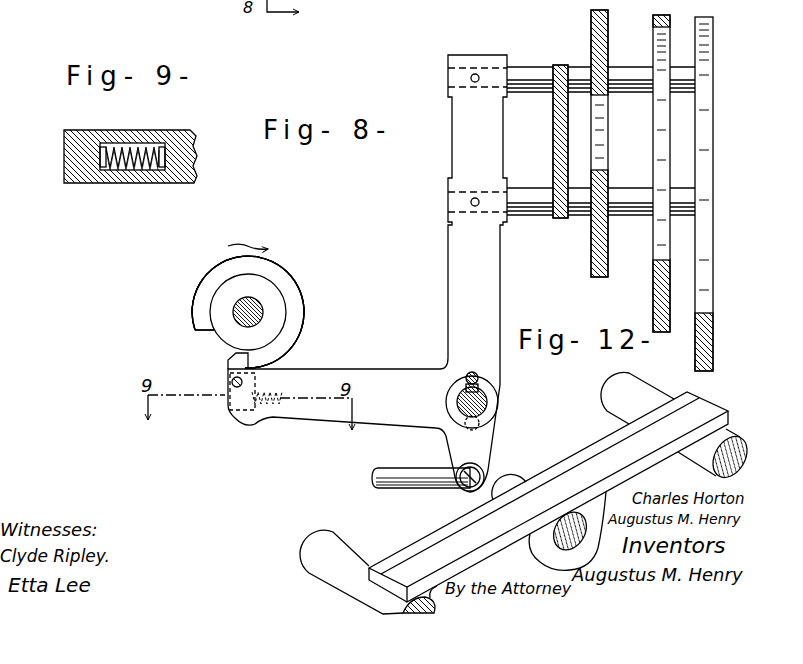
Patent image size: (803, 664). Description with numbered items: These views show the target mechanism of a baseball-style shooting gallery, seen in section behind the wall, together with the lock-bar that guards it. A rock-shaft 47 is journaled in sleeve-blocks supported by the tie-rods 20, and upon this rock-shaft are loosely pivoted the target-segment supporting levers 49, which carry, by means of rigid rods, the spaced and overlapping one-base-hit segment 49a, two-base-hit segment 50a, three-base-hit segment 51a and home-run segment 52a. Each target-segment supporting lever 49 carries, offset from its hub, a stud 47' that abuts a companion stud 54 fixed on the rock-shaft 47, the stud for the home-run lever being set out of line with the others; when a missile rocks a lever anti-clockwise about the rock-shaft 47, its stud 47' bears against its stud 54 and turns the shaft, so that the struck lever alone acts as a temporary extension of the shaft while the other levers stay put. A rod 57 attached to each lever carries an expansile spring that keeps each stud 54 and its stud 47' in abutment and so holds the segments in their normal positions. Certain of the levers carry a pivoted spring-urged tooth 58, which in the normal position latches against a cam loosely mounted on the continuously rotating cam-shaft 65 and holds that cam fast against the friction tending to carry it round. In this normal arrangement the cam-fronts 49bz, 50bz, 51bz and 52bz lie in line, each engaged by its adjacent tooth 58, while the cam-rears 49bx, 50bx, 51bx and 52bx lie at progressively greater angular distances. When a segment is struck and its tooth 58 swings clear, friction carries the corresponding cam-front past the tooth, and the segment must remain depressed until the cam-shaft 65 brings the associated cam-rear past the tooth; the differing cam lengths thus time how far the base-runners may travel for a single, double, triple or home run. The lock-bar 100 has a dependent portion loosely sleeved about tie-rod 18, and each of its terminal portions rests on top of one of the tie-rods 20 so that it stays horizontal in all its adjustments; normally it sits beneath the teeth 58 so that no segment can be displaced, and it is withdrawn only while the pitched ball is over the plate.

In FIG. 9, the target-segment supporting lever 49 is at (185, 133).
In FIG. 8, the target-segment supporting lever 49 is at (367, 273).
In FIG. 9, the pivoted spring-urged tooth 58 is at (63, 160).
In FIG. 8, the pivoted spring-urged tooth 58 is at (236, 363).
In FIG. 8, the stud 54 is at (532, 82).
In FIG. 8, the home-run segment 52a is at (557, 65).
In FIG. 8, the three-base-hit segment 51a is at (604, 30).
In FIG. 8, the two-base-hit segment 50a is at (666, 18).
In FIG. 8, the one-base-hit segment 49a is at (706, 60).
In FIG. 8, the cam-front 49bz is at (255, 365).
In FIG. 8, the cam-front 50bz is at (248, 312).
In FIG. 8, the cam-front 51bz is at (248, 312).
In FIG. 8, the cam-front 52bz is at (248, 312).
In FIG. 8, the cam-rear 49bx is at (272, 352).
In FIG. 8, the cam-rear 50bx is at (290, 292).
In FIG. 8, the cam-rear 51bx is at (224, 272).
In FIG. 8, the cam-rear 52bx is at (200, 335).
In FIG. 8, the cam-shaft 65 is at (252, 306).
In FIG. 8, the rock-shaft 47 is at (449, 417).
In FIG. 8, the stud 47' is at (499, 372).
In FIG. 8, the rod 57 is at (386, 472).
In FIG. 12, the lock-bar 100 is at (548, 497).
In FIG. 12, the tie-rod 18 is at (517, 478).
In FIG. 12, the tie-rods 20 is at (328, 542).